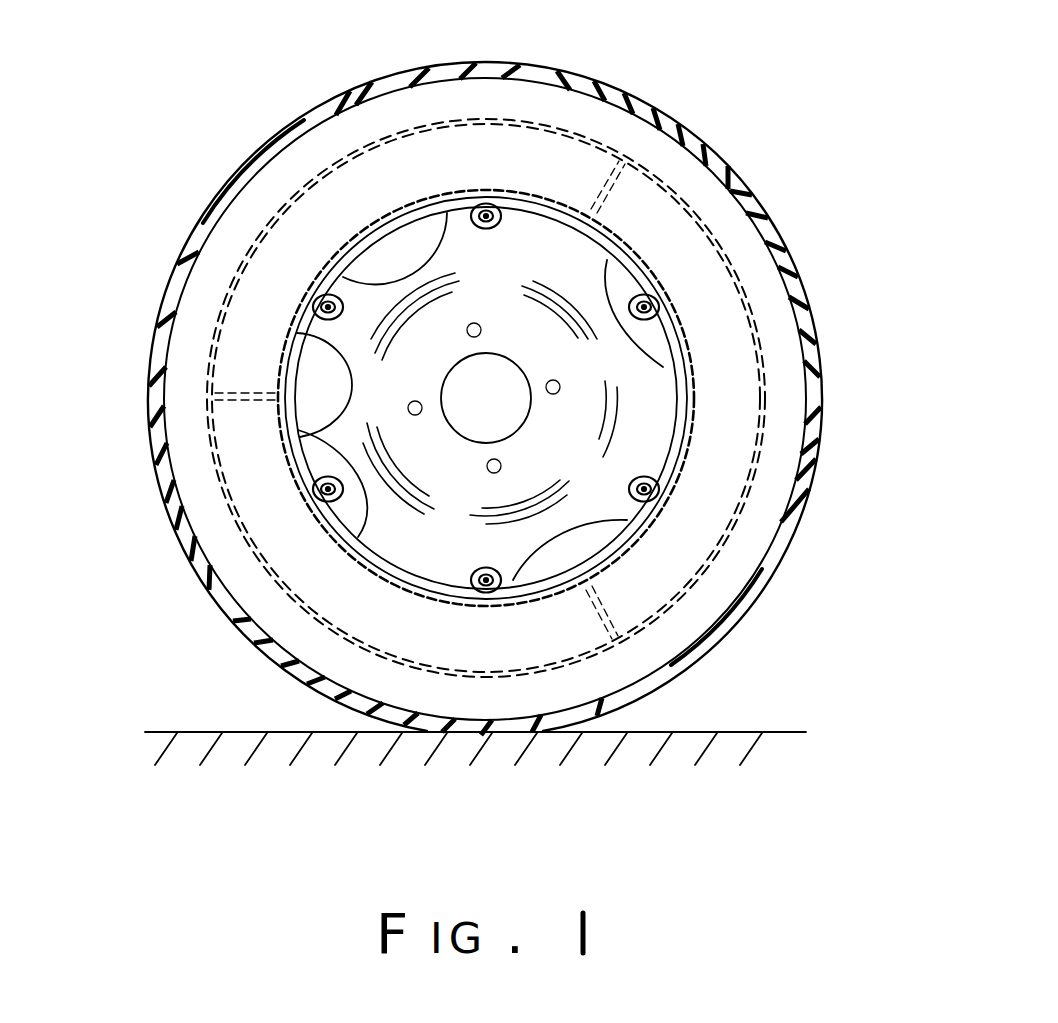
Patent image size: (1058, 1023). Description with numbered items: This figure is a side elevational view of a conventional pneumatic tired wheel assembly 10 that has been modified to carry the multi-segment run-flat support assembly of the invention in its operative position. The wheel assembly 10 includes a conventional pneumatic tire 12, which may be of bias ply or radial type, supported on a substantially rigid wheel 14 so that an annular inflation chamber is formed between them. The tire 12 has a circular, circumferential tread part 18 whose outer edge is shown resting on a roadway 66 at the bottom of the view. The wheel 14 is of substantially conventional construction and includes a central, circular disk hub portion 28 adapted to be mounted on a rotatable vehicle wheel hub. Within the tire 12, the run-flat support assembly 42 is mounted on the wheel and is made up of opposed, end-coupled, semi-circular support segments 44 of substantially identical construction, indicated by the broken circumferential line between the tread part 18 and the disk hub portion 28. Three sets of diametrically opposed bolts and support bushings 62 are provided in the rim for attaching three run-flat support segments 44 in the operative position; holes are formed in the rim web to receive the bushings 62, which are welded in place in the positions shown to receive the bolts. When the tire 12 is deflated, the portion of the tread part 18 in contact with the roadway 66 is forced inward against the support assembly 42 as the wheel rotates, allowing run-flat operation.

The wheel assembly 10 is at (493, 375).
The pneumatic tire 12 is at (770, 228).
The wheel 14 is at (692, 376).
The tread part 18 is at (558, 63).
The disk hub portion 28 is at (298, 329).
The run-flat support assembly 42 is at (783, 391).
The support segments 44 is at (358, 147).
The support bushings 62 is at (485, 203).
The roadway 66 is at (736, 731).